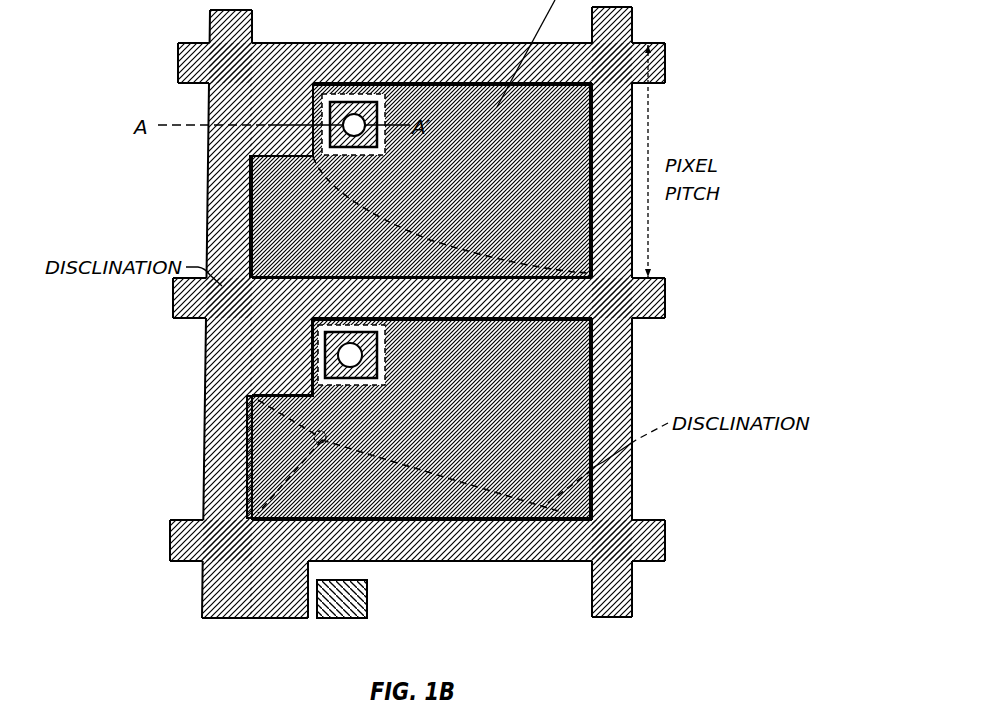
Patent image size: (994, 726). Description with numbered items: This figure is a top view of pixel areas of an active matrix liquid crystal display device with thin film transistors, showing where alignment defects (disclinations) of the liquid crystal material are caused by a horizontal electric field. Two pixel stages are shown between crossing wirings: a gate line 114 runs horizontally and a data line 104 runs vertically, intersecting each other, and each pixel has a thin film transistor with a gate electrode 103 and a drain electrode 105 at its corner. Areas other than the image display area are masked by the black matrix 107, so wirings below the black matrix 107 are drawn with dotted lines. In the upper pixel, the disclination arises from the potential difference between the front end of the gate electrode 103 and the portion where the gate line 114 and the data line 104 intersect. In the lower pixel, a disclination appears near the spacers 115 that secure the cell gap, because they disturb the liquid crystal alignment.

The gate electrode 103 is at (299, 62).
The data line 104 is at (226, 195).
The drain electrode 105 is at (353, 124).
The black matrix 107 is at (633, 443).
The gate line 114 is at (343, 105).
The spacers 115 is at (224, 396).